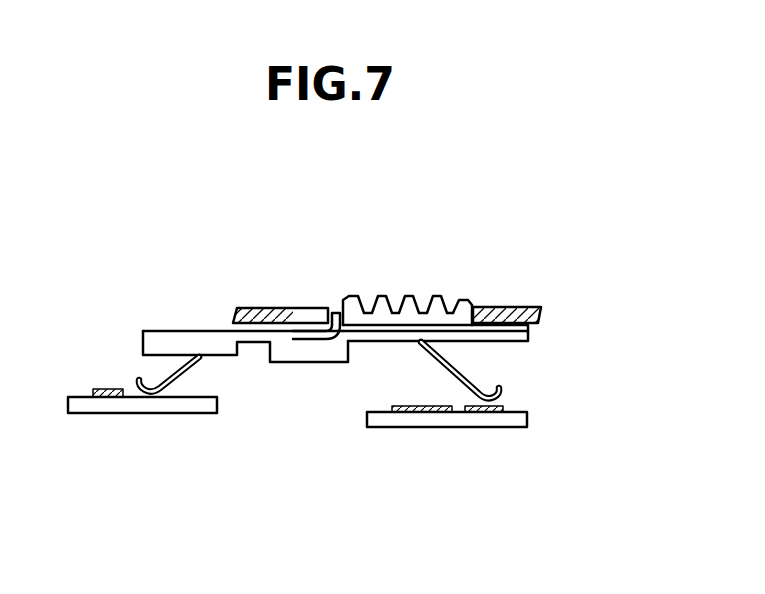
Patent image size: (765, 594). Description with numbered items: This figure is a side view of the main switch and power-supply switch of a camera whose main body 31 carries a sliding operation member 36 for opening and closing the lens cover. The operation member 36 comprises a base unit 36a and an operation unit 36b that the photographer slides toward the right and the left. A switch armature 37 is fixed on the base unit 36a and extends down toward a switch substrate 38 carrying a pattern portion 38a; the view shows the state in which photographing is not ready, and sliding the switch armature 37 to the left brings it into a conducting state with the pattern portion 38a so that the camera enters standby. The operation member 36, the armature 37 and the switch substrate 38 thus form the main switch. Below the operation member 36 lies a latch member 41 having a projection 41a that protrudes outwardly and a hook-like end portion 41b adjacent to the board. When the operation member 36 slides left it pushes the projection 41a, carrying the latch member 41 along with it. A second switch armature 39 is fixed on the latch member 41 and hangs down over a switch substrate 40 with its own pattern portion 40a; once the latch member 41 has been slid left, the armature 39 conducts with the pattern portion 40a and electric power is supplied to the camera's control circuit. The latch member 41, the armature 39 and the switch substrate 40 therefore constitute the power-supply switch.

The main body 31 is at (540, 307).
The operation member 36 is at (405, 296).
The base unit 36a is at (528, 333).
The operation unit 36b is at (467, 299).
The switch armature 37 is at (458, 372).
The switch substrate 38 is at (428, 427).
The pattern portion 38a is at (402, 406).
The switch armature 39 is at (183, 377).
The switch substrate 40 is at (138, 413).
The pattern portion 40a is at (107, 389).
The latch member 41 is at (172, 335).
The projection 41a is at (332, 313).
The hook portion of support plate 41b is at (307, 333).